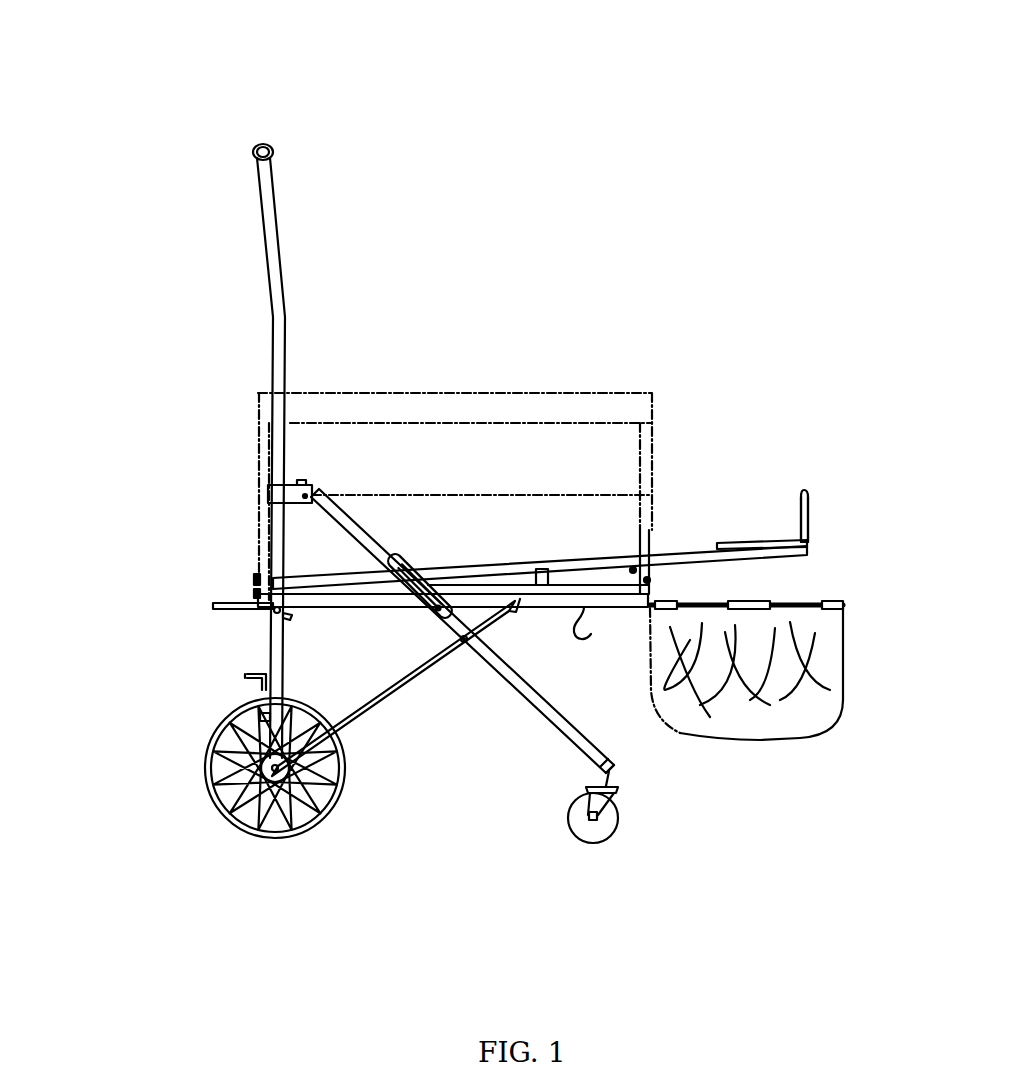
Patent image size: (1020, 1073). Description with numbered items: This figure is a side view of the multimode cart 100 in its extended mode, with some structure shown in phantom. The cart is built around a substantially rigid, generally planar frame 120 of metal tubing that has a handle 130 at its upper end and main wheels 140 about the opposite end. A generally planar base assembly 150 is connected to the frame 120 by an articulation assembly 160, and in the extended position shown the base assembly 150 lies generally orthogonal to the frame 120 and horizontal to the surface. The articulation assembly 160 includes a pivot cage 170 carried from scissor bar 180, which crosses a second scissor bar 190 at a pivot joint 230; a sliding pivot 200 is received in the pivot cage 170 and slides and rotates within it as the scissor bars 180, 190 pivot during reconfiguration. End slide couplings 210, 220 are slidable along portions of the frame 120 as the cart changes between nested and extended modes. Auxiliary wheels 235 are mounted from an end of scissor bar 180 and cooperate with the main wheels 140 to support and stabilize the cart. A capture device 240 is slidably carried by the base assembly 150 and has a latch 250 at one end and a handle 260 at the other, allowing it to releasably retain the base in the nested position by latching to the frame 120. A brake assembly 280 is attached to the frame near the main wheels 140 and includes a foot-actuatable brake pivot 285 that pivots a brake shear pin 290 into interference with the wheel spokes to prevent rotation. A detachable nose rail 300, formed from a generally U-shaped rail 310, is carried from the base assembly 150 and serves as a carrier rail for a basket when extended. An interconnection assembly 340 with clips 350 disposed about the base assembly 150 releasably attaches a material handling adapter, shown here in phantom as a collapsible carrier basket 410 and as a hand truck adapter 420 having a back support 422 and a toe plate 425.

The multimode cart 100 is at (635, 167).
The frame 120 is at (278, 227).
The handle 130 is at (266, 142).
The main wheels 140 is at (221, 822).
The base assembly 150 is at (633, 622).
The articulation assembly 160 is at (429, 731).
The pivot cage 170 is at (400, 562).
The scissor bar 180 is at (510, 697).
The scissor bar 190 is at (353, 722).
The sliding pivot 200 is at (425, 611).
The end slide coupling 210 is at (253, 509).
The end slide coupling 220 is at (302, 489).
The pivot joint 230 is at (465, 648).
The auxiliary wheels 235 is at (612, 840).
The capture device 240 is at (218, 623).
The latch 250 is at (578, 642).
The handle 260 is at (226, 602).
The brake assembly 280 is at (238, 678).
The brake pivot 285 is at (260, 712).
The brake shear pin 290 is at (247, 659).
The detachable nose rail 300 is at (812, 595).
The U-shaped rail 310 is at (790, 597).
The interconnection assembly 340 is at (243, 581).
The clips 350 is at (245, 588).
The collapsible carrier basket 410 is at (633, 384).
The hand truck adapter 420 is at (819, 504).
The back support 422 is at (682, 546).
The toe plate 425 is at (812, 522).